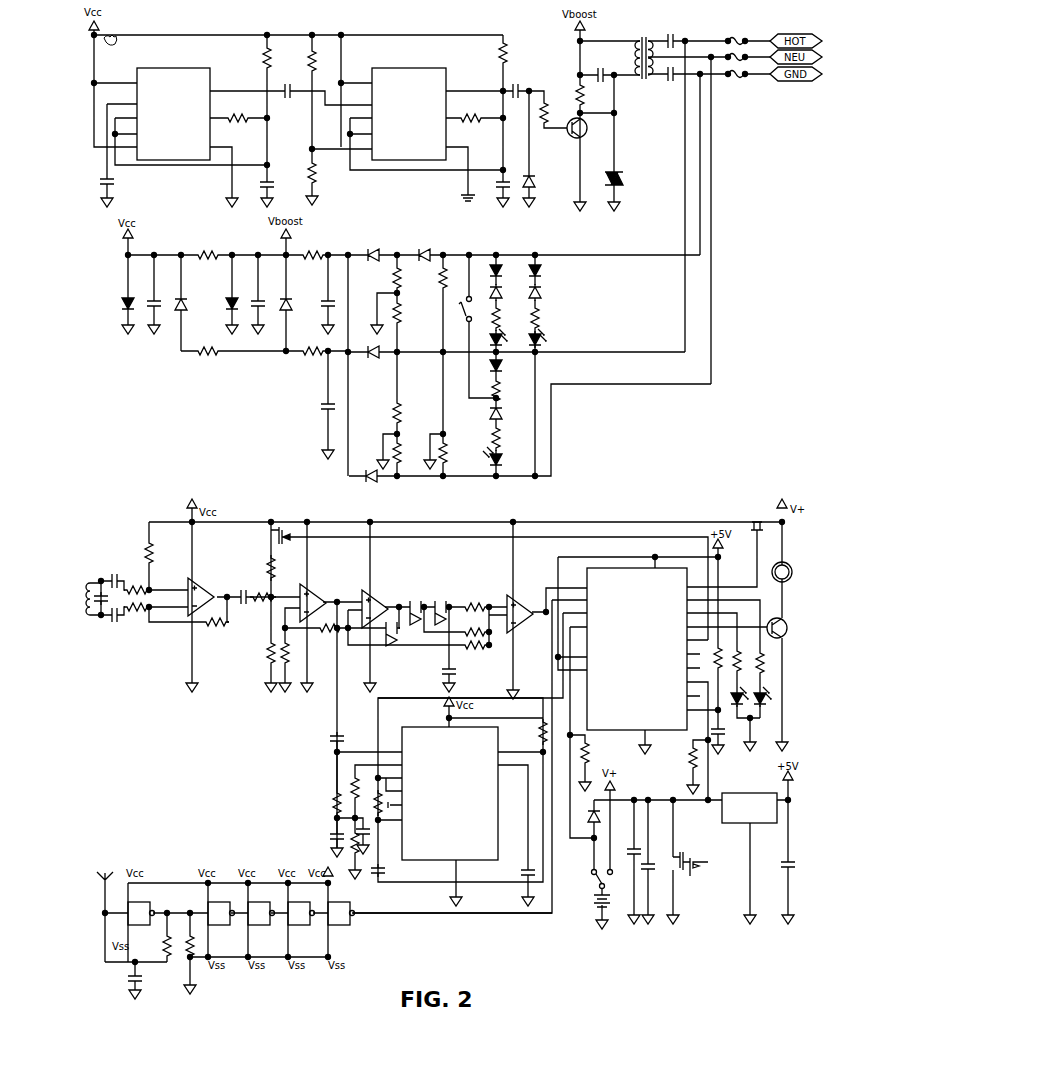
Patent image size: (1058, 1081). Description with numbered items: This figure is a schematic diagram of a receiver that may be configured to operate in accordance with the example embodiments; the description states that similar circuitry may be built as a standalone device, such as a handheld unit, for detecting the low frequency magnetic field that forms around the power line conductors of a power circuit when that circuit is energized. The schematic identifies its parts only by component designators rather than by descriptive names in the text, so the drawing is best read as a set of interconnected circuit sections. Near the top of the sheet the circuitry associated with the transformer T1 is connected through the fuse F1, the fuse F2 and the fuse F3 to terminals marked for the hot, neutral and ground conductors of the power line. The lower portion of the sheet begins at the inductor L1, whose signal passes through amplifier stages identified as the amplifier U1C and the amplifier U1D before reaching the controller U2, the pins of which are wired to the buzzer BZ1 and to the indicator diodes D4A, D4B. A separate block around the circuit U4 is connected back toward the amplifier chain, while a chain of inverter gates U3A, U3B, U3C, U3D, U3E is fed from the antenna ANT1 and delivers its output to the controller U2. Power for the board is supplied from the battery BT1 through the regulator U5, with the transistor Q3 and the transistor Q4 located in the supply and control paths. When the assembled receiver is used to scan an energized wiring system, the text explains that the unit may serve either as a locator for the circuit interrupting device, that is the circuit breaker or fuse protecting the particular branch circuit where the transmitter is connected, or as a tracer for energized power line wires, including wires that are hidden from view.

The op-amp U1C is at (374, 604).
The op-amp U1D is at (520, 611).
The microcontroller U2 is at (637, 650).
The inverter gate U3A is at (144, 913).
The inverter gate U3B is at (224, 913).
The inverter gate U3C is at (264, 913).
The inverter gate U3D is at (305, 913).
The inverter gate U3E is at (343, 913).
The phase locked loop U4 is at (453, 793).
The voltage regulator U5 is at (748, 808).
The transformer T1 is at (644, 50).
The transistor Q3 is at (682, 871).
The transistor Q4 is at (274, 535).
The buzzer BZ1 is at (796, 572).
The inductor L1 is at (89, 592).
The antenna ANT1 is at (105, 909).
The battery BT1 is at (590, 900).
The fuse F1 is at (745, 35).
The fuse F2 is at (745, 52).
The fuse F3 is at (745, 69).
The LED D4A is at (745, 692).
The LED D4B is at (768, 692).